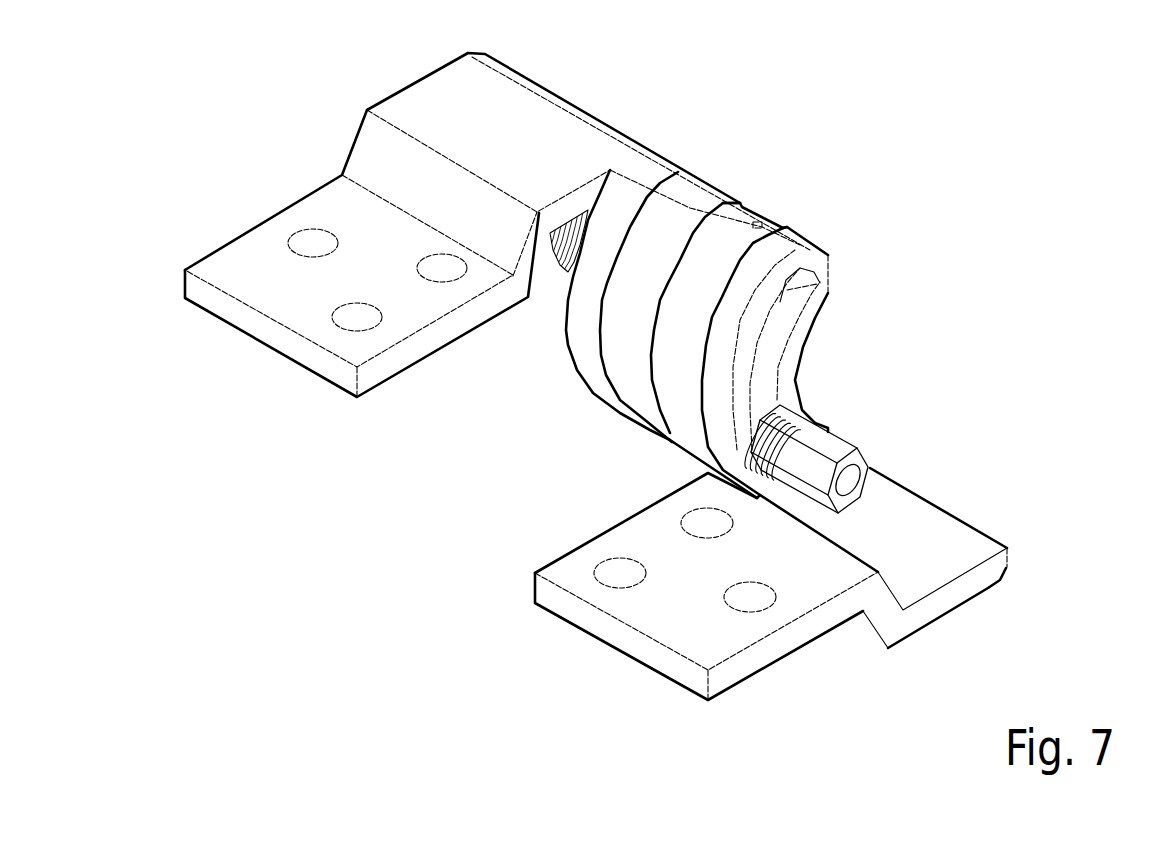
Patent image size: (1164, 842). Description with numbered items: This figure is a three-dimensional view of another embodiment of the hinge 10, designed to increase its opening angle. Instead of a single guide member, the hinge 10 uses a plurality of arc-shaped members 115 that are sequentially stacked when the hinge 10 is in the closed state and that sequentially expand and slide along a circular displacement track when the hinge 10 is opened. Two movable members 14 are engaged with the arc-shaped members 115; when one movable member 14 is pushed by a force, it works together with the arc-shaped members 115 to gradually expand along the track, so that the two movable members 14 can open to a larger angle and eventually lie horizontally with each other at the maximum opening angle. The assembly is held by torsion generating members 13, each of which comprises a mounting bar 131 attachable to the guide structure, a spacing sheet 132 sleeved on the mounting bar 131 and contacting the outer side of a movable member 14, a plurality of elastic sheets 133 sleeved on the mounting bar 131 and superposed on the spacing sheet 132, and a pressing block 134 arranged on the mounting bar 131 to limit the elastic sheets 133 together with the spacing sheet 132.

The hinge 10 is at (1120, 111).
The arc-shaped members 115 is at (758, 222).
The torsion generating member 13 is at (876, 403).
The mounting bar 131 is at (797, 357).
The spacing sheet 132 is at (857, 378).
The elastic sheets 133 is at (790, 408).
The pressing block 134 is at (873, 460).
The movable members 14 is at (317, 374).